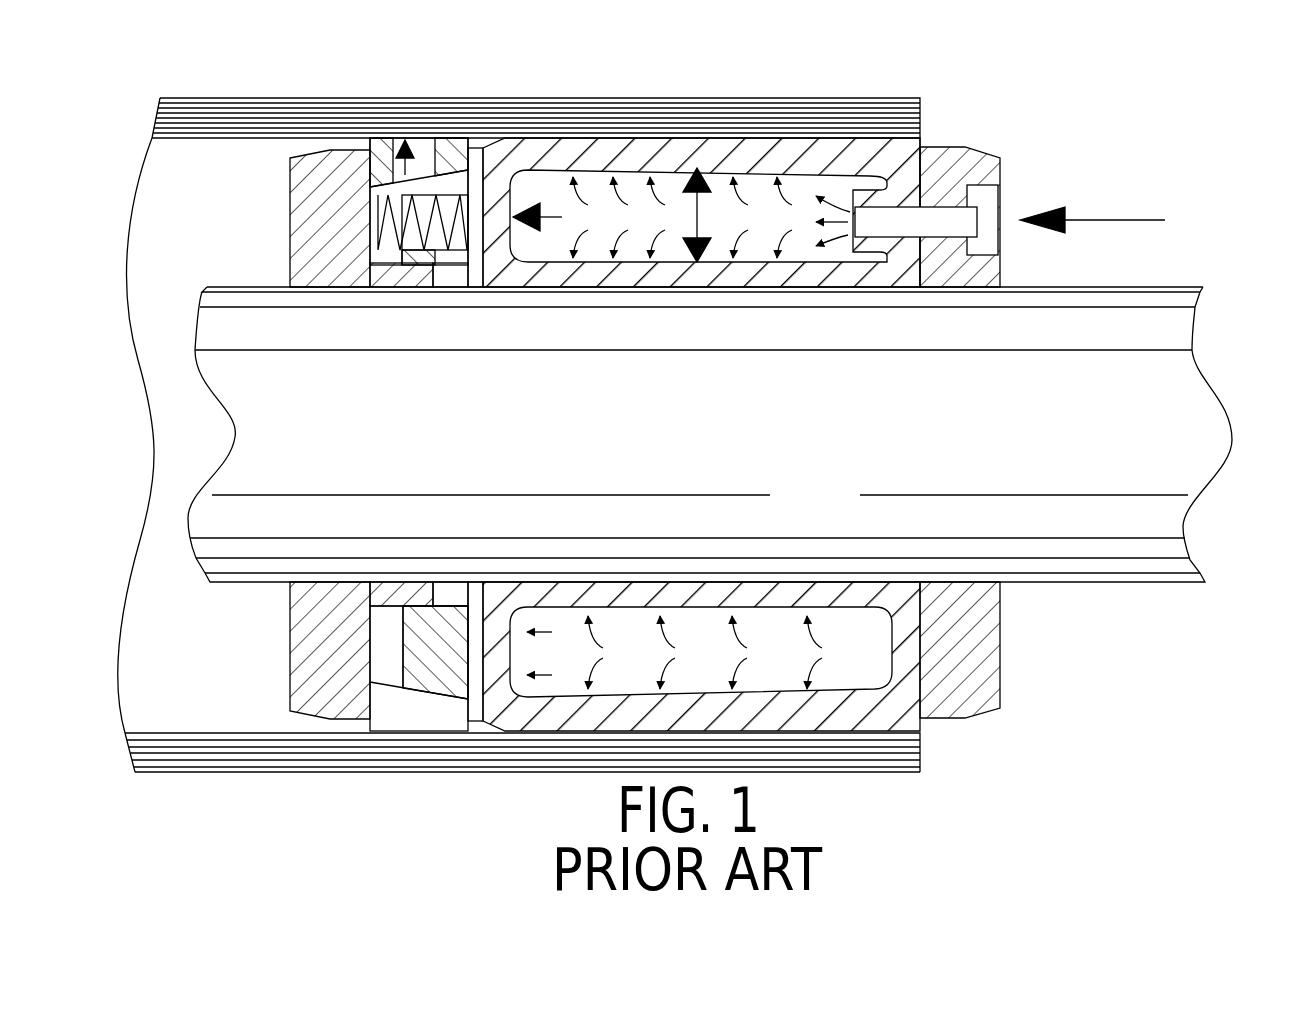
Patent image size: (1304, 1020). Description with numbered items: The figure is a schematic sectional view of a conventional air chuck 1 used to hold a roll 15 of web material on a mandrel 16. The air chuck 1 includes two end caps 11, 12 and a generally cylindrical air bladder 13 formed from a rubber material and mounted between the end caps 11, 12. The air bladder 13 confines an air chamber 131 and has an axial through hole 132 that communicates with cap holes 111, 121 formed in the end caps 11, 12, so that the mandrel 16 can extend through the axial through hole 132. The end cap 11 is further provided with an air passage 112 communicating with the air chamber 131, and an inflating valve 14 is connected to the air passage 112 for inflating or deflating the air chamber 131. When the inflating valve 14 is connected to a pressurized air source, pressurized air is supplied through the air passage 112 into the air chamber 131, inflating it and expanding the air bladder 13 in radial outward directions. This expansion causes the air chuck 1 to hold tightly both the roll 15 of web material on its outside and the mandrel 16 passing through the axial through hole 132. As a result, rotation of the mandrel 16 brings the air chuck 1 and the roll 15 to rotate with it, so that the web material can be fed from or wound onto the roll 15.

The air chuck 1 is at (505, 86).
The end cap 11 is at (963, 160).
The cap hole 111 is at (987, 283).
The air passage 112 is at (927, 205).
The end cap 12 is at (323, 180).
The cap hole 121 is at (330, 282).
The air bladder 13 is at (673, 160).
The air chamber 131 is at (812, 183).
The axial through hole 132 is at (657, 283).
The inflating valve 14 is at (953, 223).
The roll 15 is at (777, 117).
The mandrel 16 is at (1158, 333).